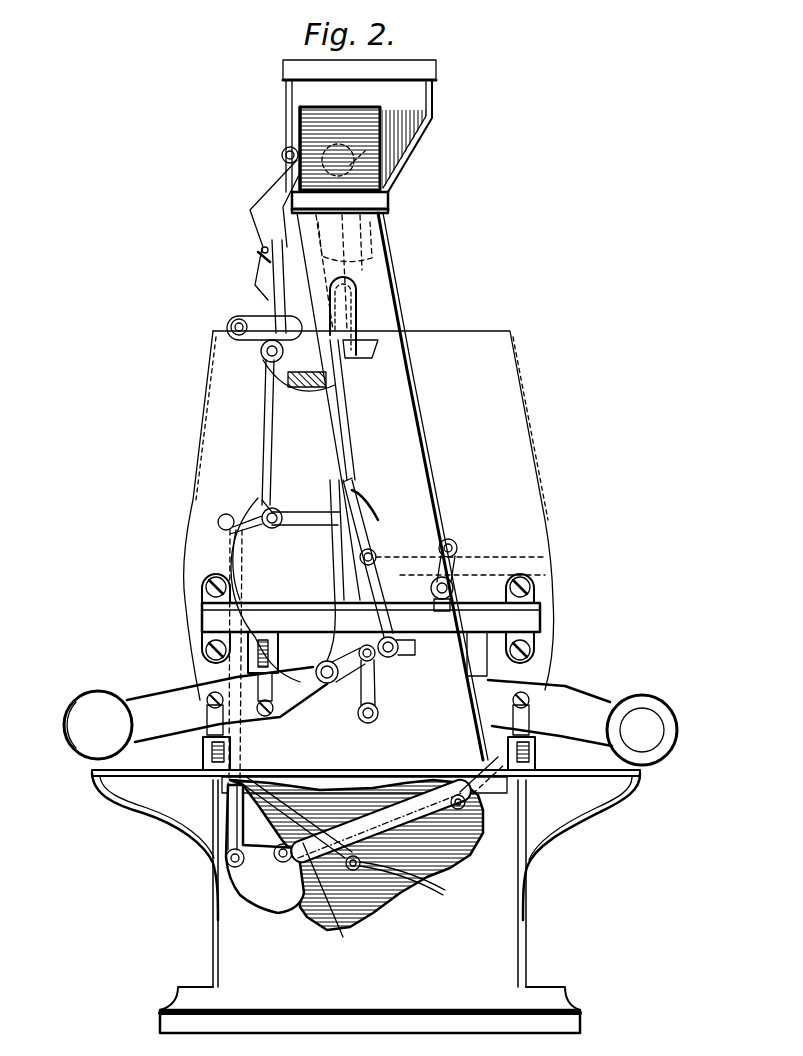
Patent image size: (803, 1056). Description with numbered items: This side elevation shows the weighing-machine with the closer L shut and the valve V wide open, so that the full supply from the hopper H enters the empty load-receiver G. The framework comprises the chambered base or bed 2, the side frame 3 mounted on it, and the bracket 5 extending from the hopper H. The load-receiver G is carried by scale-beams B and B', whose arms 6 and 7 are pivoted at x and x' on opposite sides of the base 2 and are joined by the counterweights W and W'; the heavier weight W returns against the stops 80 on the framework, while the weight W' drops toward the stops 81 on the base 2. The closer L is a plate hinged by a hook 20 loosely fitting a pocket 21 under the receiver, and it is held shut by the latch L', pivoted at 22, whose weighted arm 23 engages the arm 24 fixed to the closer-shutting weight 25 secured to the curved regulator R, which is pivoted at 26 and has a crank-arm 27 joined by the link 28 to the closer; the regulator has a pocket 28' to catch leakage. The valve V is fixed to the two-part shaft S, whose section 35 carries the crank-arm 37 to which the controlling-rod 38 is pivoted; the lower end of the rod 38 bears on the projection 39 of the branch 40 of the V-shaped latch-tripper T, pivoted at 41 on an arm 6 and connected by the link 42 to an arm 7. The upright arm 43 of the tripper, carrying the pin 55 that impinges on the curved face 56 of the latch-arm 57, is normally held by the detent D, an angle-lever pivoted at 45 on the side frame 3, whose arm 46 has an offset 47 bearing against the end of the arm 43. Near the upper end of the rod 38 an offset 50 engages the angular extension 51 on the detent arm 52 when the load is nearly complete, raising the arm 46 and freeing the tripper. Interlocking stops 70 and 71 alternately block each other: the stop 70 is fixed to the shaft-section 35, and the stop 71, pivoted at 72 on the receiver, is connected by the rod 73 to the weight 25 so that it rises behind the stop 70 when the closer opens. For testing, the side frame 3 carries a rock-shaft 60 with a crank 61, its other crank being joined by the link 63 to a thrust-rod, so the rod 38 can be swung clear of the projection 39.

The supply-hopper H is at (438, 97).
The two-part shaft S is at (340, 148).
The bracket 5 is at (302, 122).
The crank-arm 37 is at (283, 150).
The shaft-section 35 is at (350, 165).
The valve V is at (262, 206).
The projection or offset 50 is at (262, 250).
The angular extension 51 is at (262, 258).
The stop 70 is at (263, 268).
The arm of detent 52 is at (285, 288).
The detent D is at (264, 317).
The pivot 72 is at (232, 329).
The pivot 45 is at (262, 353).
The stop 71 is at (302, 390).
The arm of detent 46 is at (342, 345).
The stop or offset 47 is at (365, 357).
The side frame 3 is at (416, 405).
The controlling-rod 38 is at (352, 468).
The curved face 56 is at (362, 500).
The projection or pin 55 is at (345, 486).
The link 63 is at (380, 548).
The crank 61 is at (458, 553).
The rock-shaft 60 is at (454, 588).
The load-receiver G is at (369, 515).
The latch-tripper T is at (371, 641).
The pivot 41 is at (318, 666).
The branch of tripper 40 is at (347, 676).
The link 42 is at (372, 692).
The projection 39 is at (400, 650).
The scale-beam B is at (227, 704).
The counterweight W is at (79, 725).
The scale-beam B' is at (550, 705).
The counterweight W' is at (642, 717).
The pivot x is at (188, 713).
The beam-arm 6 is at (162, 740).
The pivot x' is at (543, 713).
The beam-arm 7 is at (578, 726).
The chambered base or bed 2 is at (523, 915).
The stops 80 is at (145, 805).
The stops 81 is at (608, 800).
The closer-retarding regulator R is at (388, 888).
The closer L is at (381, 821).
The closer-shutting weight 25 is at (268, 912).
The link 28 is at (298, 821).
The depression or pocket 28' is at (337, 898).
The pivot 26 is at (276, 860).
The crank-arm 27 is at (228, 866).
The hook 20 is at (456, 794).
The groove or pocket 21 is at (440, 790).
The rod 73 is at (262, 428).
The pivot 22 is at (262, 503).
The latch L' is at (285, 581).
The latch-arm 57 is at (335, 514).
The upright or long arm of tripper 43 is at (334, 540).
The forward weighted arm 23 is at (218, 520).
The arm 24 is at (232, 548).